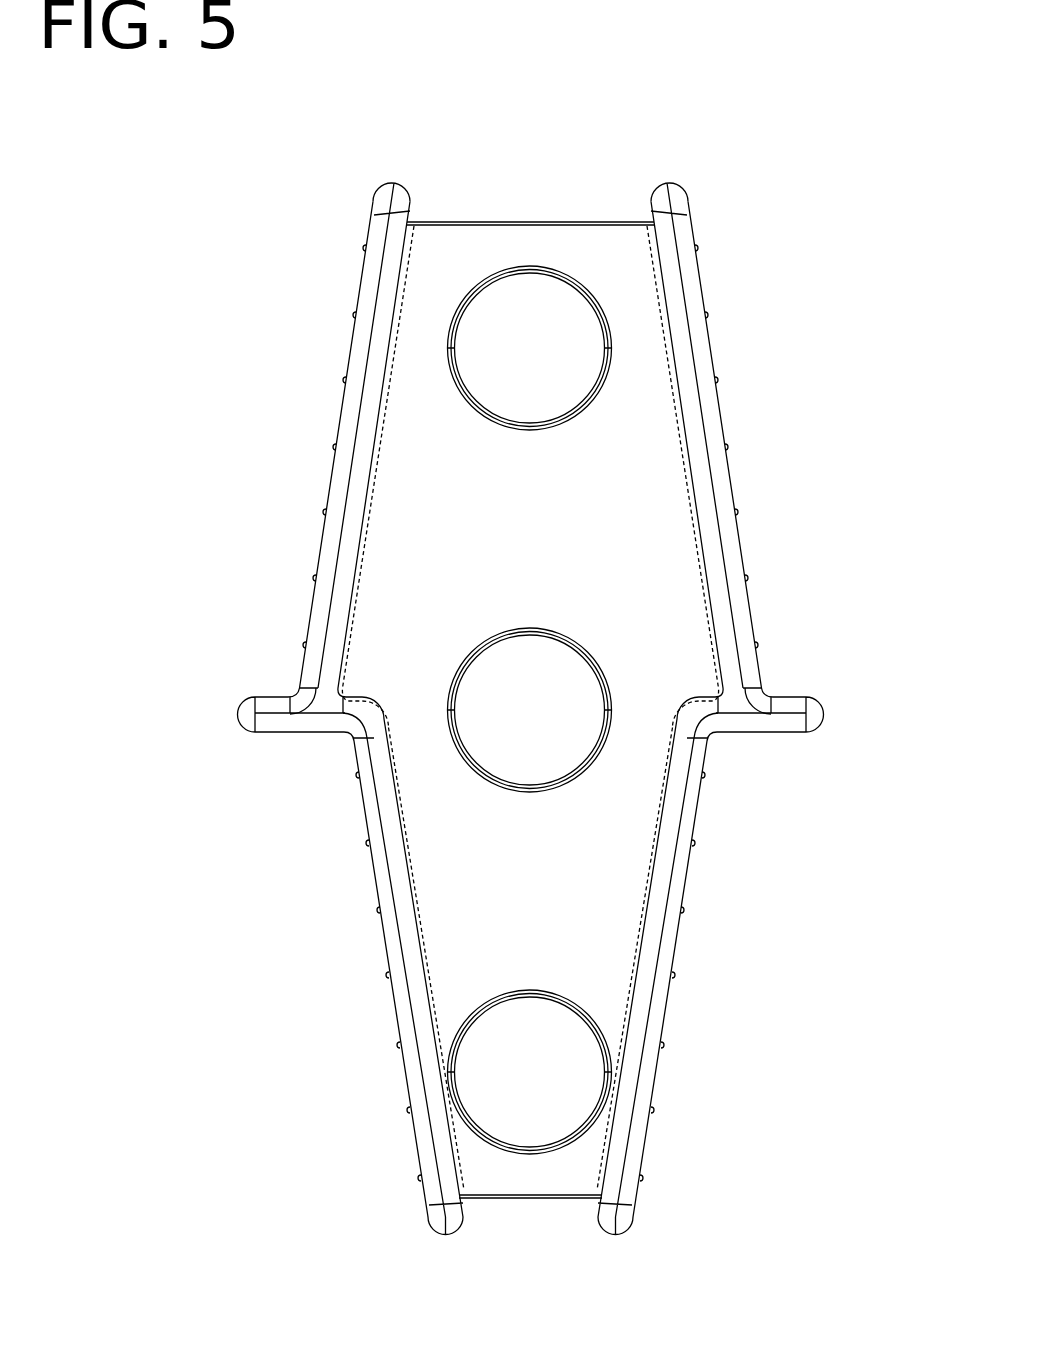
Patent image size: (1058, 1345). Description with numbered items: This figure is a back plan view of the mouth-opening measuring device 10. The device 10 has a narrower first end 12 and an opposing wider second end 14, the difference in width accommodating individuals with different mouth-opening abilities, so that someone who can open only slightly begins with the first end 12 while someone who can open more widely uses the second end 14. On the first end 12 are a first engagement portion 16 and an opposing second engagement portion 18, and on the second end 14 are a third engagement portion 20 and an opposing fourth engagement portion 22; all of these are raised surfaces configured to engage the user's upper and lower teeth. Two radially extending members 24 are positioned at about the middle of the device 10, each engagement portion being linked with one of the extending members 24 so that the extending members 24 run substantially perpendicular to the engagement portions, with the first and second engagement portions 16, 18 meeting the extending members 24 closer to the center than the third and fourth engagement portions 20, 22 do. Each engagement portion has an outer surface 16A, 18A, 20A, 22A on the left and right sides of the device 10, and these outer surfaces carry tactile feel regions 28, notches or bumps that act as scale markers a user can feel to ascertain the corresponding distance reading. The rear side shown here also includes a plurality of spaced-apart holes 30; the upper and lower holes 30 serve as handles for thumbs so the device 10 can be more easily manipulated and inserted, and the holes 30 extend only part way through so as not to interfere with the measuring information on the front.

The mouth-opening measuring device 10 is at (900, 142).
The first end 12 is at (527, 1198).
The second end 14 is at (538, 222).
The first engagement portion 16 is at (657, 1072).
The outer surface of first engagement portion 16A is at (700, 858).
The second engagement portion 18 is at (398, 993).
The outer surface of second engagement portion 18A is at (372, 870).
The third engagement portion 20 is at (360, 348).
The outer surface of third engagement portion 20A is at (368, 258).
The fourth engagement portion 22 is at (714, 413).
The outer surface of fourth engagement portion 22A is at (705, 330).
The radially extending members 24 is at (240, 734).
The tactile feel regions 28 is at (318, 578).
The holes 30 is at (524, 347).